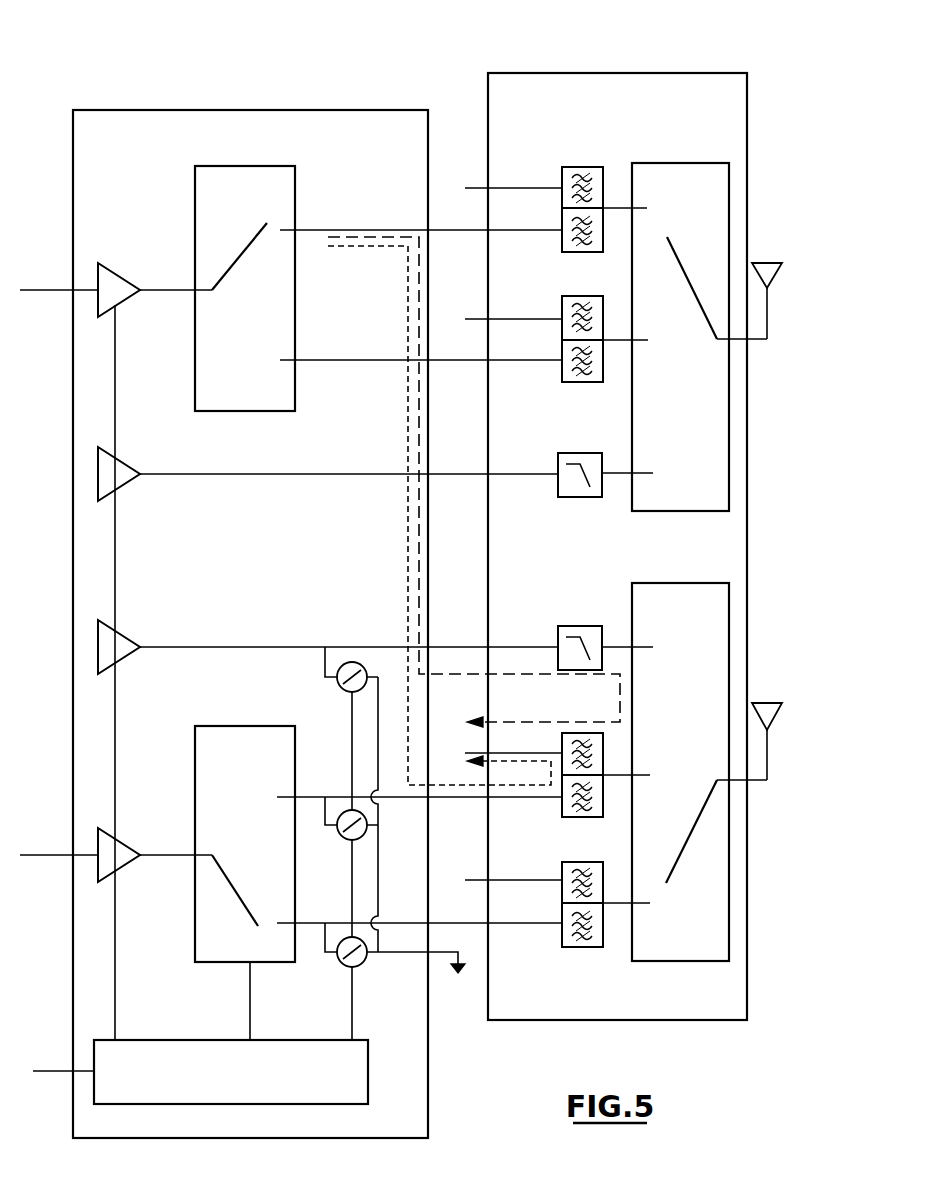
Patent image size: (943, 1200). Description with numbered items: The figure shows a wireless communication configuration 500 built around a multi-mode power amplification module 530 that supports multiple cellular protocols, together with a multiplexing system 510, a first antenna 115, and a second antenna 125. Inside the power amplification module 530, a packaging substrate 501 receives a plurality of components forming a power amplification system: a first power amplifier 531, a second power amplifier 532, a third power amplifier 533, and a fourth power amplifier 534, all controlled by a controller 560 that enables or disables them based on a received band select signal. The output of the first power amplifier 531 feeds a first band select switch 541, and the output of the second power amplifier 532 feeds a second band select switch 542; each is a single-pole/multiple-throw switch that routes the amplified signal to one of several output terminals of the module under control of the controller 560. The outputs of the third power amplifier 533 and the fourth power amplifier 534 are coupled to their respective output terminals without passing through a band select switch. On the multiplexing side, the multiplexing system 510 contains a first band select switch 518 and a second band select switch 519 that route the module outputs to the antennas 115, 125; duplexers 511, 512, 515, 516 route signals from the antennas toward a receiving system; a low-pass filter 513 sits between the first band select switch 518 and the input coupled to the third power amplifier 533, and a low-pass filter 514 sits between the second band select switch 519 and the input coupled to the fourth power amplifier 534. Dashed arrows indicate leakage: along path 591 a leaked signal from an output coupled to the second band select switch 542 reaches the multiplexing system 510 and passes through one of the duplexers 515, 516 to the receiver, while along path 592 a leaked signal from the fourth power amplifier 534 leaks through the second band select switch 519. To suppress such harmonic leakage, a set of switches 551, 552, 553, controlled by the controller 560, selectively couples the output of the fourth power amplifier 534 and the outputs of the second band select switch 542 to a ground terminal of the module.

The wireless communication configuration 500 is at (397, 68).
The packaging substrate 501 is at (97, 178).
The multiplexing system 510 is at (600, 73).
The duplexer 511 is at (575, 167).
The duplexer 512 is at (575, 296).
The low-pass filter 513 is at (572, 453).
The low-pass filter 514 is at (572, 626).
The duplexer 515 is at (575, 817).
The duplexer 516 is at (575, 862).
The first band select switch 518 is at (685, 163).
The second band select switch 519 is at (685, 583).
The first antenna 115 is at (775, 278).
The second antenna 125 is at (775, 718).
The multi-mode power amplification module 530 is at (160, 110).
The first power amplifier 531 is at (115, 270).
The second power amplifier 532 is at (120, 848).
The third power amplifier 533 is at (120, 466).
The fourth power amplifier 534 is at (120, 638).
The first band select switch 541 is at (283, 166).
The second band select switch 542 is at (240, 726).
The switch 551 is at (350, 692).
The switch 552 is at (348, 840).
The switch 553 is at (345, 967).
The controller 560 is at (274, 1040).
The path 591 is at (462, 785).
The path 592 is at (452, 674).